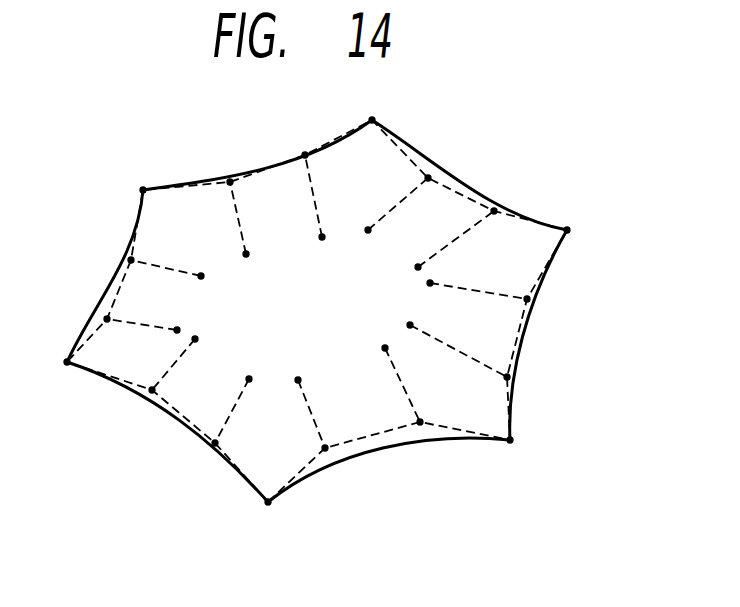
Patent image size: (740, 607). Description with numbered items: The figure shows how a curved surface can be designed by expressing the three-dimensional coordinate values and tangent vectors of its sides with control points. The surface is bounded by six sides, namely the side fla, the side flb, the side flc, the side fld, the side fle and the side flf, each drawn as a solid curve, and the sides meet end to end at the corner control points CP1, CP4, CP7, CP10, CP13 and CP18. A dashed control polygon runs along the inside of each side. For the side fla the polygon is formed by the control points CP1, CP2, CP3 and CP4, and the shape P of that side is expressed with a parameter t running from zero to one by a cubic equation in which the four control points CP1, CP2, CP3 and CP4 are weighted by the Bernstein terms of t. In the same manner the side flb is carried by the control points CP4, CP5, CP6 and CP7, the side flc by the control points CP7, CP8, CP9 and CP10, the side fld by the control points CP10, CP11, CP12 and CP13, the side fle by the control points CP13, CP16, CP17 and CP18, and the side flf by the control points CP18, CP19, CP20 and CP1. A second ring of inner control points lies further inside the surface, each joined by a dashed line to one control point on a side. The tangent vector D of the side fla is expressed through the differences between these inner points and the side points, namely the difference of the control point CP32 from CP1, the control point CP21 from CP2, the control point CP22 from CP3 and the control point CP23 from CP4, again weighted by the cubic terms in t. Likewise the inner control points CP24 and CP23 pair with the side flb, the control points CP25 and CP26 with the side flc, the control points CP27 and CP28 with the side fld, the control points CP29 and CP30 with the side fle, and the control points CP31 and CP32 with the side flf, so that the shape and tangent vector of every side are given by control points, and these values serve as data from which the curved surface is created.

The control point CP1 is at (268, 505).
The control point CP2 is at (325, 451).
The control point CP3 is at (420, 425).
The control point CP4 is at (513, 441).
The control point CP5 is at (510, 377).
The control point CP6 is at (530, 300).
The control point CP7 is at (570, 230).
The control point CP8 is at (497, 209).
The control point CP9 is at (430, 176).
The control point CP10 is at (374, 118).
The control point CP11 is at (306, 152).
The control point CP12 is at (230, 179).
The control point CP13 is at (143, 187).
The control point CP16 is at (128, 260).
The control point CP17 is at (104, 319).
The control point CP18 is at (66, 365).
The control point CP19 is at (150, 392).
The control point CP20 is at (214, 446).
The control point CP21 is at (301, 379).
The control point CP22 is at (383, 346).
The control point CP23 is at (413, 324).
The control point CP24 is at (433, 282).
The control point CP25 is at (417, 264).
The control point CP26 is at (368, 227).
The control point CP27 is at (320, 235).
The control point CP28 is at (246, 257).
The control point CP29 is at (199, 274).
The control point CP30 is at (175, 328).
The control point CP31 is at (198, 338).
The control point CP32 is at (250, 382).
The side fla is at (395, 452).
The side flb is at (529, 337).
The side flc is at (465, 181).
The side fld is at (272, 158).
The side fle is at (108, 288).
The side flf is at (168, 422).